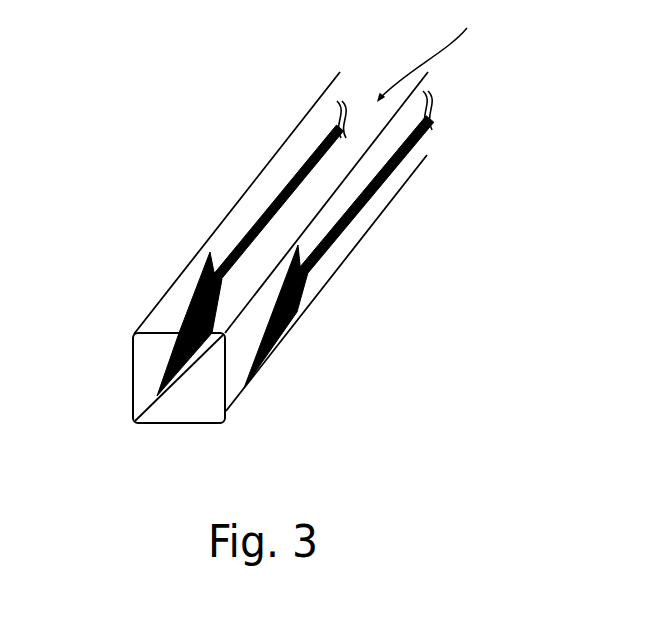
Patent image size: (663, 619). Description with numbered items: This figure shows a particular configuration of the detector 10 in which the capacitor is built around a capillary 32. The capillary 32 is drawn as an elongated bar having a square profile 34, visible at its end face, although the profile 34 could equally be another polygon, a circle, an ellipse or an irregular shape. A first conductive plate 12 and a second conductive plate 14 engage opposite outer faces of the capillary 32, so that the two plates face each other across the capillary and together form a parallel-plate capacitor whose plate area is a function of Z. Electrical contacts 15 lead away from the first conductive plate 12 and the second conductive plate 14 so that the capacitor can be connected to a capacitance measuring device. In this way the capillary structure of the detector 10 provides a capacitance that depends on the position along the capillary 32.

The detector 10 is at (283, 28).
The first conductive plate 12 is at (203, 308).
The second conductive plate 14 is at (300, 316).
The electrical contacts 15 is at (268, 206).
The capillary 32 is at (438, 51).
The square profile 34 is at (194, 402).